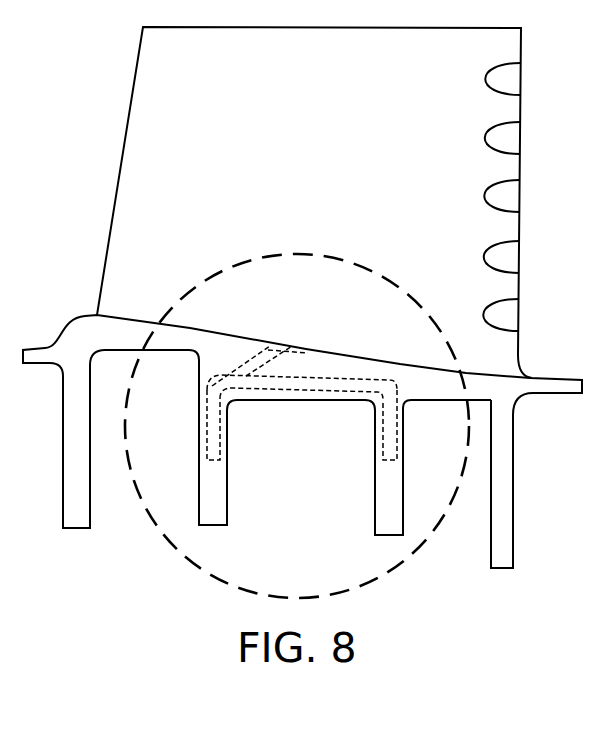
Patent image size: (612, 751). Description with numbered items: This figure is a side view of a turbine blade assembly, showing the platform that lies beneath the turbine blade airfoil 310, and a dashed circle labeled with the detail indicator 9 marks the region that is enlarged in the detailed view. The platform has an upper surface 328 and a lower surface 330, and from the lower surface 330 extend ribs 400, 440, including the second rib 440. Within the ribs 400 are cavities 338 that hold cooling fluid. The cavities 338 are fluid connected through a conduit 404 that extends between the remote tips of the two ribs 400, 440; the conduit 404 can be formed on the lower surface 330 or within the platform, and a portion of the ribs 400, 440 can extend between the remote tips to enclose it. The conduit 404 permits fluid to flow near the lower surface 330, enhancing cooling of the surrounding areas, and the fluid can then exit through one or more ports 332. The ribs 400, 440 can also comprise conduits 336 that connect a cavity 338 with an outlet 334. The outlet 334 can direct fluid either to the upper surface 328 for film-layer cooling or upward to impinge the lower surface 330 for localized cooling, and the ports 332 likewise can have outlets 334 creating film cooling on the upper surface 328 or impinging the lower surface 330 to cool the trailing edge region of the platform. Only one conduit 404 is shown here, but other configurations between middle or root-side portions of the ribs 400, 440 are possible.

The turbine blade airfoil 310 is at (150, 133).
The upper surface 328 is at (431, 370).
The lower surface 330 is at (437, 400).
The ports 332 is at (235, 436).
The outlet 334 is at (292, 350).
The conduits 336 is at (250, 356).
The cavities 338 is at (213, 437).
The ribs 400 is at (378, 517).
The conduit 404 is at (347, 380).
The second rib 440 is at (218, 512).
The detail region of FIG. 9 is at (308, 252).